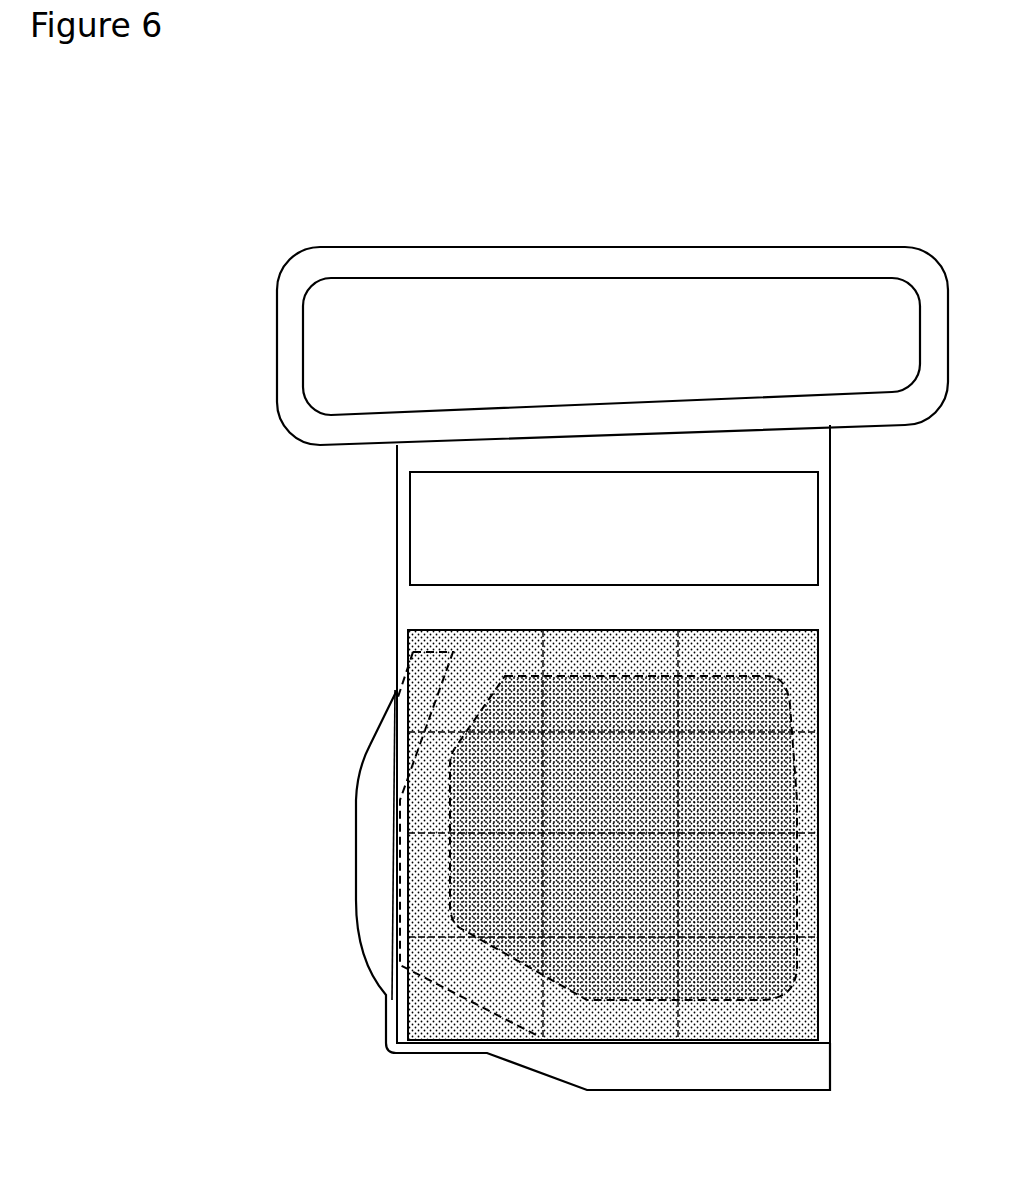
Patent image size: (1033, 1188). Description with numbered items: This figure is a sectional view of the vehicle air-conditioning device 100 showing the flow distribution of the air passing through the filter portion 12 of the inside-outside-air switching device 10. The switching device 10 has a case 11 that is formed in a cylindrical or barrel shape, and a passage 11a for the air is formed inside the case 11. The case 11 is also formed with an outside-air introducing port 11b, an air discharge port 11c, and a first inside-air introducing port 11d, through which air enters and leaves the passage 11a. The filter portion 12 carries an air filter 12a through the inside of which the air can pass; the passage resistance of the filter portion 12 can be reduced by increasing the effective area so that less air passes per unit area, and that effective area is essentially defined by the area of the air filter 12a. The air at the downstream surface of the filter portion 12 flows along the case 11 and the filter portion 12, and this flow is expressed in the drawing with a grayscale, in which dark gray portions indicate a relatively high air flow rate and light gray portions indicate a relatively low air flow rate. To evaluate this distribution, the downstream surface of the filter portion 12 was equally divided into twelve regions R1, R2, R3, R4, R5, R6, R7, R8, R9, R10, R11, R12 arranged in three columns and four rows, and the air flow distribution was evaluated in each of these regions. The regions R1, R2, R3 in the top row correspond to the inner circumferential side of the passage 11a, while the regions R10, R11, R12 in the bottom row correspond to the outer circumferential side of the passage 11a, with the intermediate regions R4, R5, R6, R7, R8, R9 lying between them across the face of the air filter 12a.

The air-conditioning device 100 is at (418, 163).
The inside-outside-air switching device 10 is at (643, 185).
The case 11 is at (816, 257).
The passage 11a is at (626, 341).
The outside-air introducing port 11b is at (395, 279).
The air discharge port 11c is at (392, 877).
The first inside-air introducing port 11d is at (410, 525).
The filter portion 12 is at (818, 806).
The air filter 12a is at (798, 650).
The region R1 is at (475, 681).
The region R2 is at (610, 681).
The region R3 is at (748, 681).
The region R4 is at (475, 782).
The region R5 is at (610, 782).
The region R6 is at (748, 782).
The region R7 is at (475, 885).
The region R8 is at (610, 885).
The region R9 is at (748, 885).
The region R10 is at (475, 988).
The region R11 is at (610, 988).
The region R12 is at (748, 988).